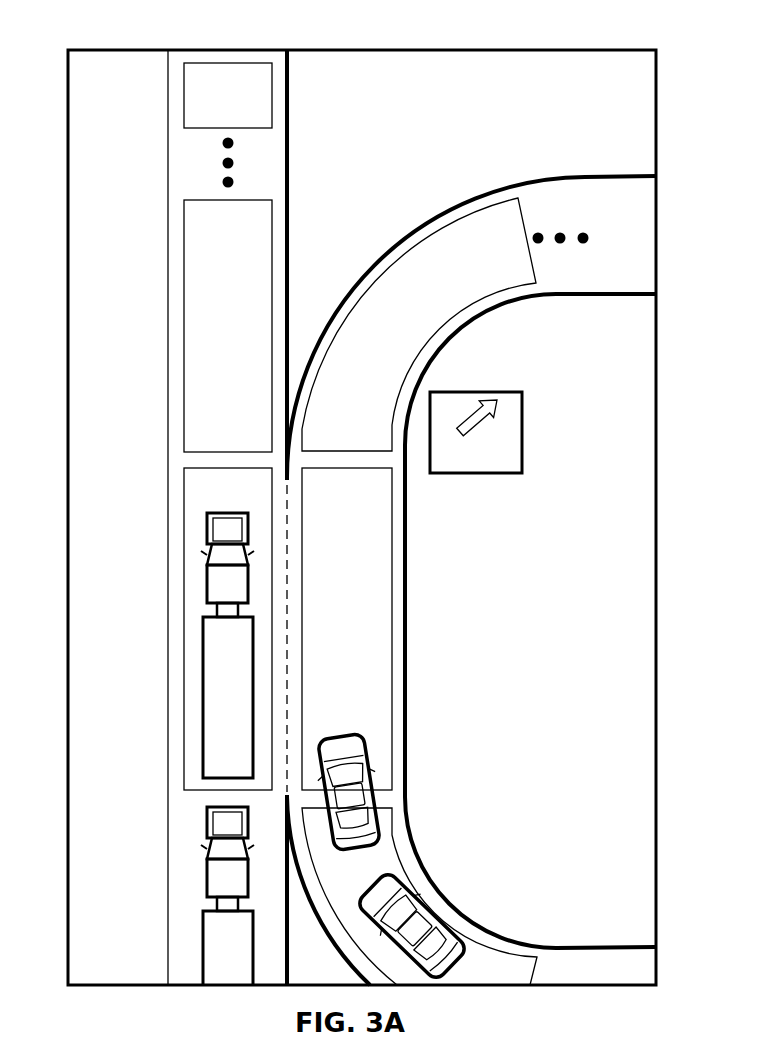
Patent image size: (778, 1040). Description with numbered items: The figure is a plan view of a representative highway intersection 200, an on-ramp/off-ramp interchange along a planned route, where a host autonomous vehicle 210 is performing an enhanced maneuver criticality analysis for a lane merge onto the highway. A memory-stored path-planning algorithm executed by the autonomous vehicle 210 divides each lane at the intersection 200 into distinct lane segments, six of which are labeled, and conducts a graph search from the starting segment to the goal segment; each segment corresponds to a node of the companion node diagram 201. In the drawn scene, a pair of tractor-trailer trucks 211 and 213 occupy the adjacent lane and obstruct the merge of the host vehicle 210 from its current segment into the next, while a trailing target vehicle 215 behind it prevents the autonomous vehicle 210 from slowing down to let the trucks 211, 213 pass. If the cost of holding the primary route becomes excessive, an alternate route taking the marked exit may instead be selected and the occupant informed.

The highway intersection 200 is at (518, 82).
The node diagram 201 is at (600, 1032).
The autonomous vehicle 210 is at (365, 744).
The tractor-trailer truck 211 is at (203, 647).
The tractor-trailer truck 213 is at (203, 916).
The trailing target vehicle 215 is at (410, 893).